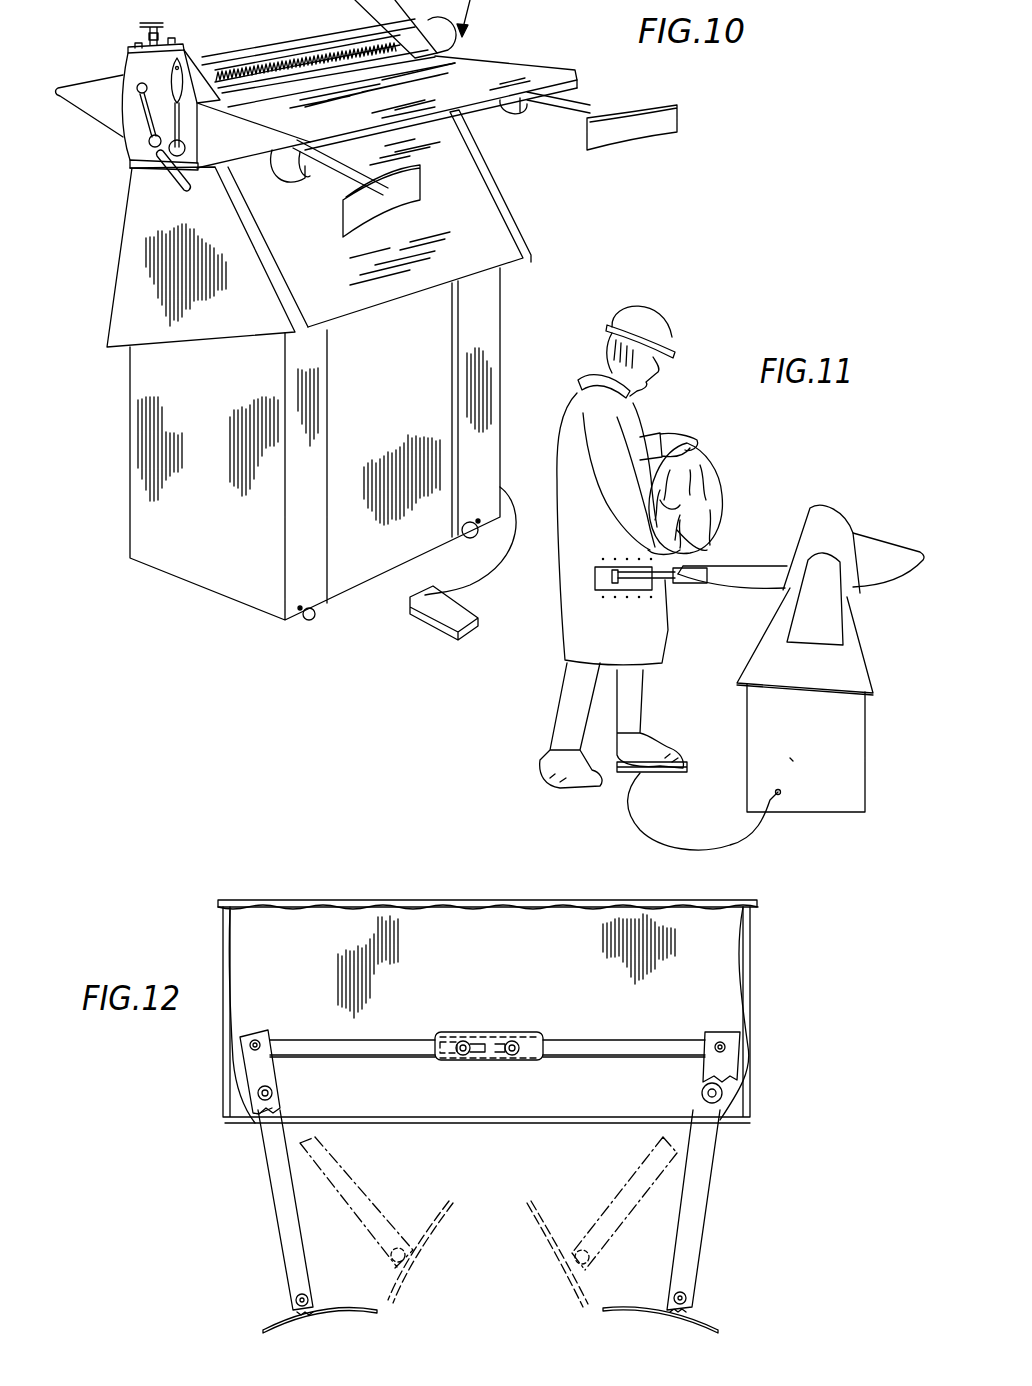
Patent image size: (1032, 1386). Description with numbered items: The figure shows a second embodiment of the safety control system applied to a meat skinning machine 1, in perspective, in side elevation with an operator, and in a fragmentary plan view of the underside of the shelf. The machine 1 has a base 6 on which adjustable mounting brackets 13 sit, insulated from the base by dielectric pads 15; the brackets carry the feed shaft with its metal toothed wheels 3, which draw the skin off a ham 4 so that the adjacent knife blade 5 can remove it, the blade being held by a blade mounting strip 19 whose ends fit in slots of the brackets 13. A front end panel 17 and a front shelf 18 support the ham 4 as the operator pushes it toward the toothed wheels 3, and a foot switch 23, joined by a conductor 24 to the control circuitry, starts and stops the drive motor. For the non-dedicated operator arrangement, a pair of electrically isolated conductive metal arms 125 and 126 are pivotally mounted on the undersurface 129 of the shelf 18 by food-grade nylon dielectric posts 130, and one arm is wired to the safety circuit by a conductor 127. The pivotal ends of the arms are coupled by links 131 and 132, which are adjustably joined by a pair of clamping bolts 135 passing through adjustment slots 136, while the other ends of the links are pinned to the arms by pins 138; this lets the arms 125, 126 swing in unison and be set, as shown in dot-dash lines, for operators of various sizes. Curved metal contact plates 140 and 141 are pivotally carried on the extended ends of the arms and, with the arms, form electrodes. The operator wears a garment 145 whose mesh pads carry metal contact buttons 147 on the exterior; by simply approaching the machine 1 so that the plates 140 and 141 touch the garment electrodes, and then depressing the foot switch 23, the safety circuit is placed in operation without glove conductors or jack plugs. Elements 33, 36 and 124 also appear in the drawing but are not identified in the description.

In FIG. 11, the meat skinning machine 1 is at (874, 644).
In FIG. 10, the metal toothed wheels 3 is at (290, 67).
In FIG. 11, the ham 4 is at (697, 480).
In FIG. 10, the knife blade 5 is at (328, 45).
In FIG. 10, the base 6 is at (210, 568).
In FIG. 10, the mounting brackets 13 is at (137, 67).
In FIG. 11, the mounting brackets 13 is at (830, 527).
In FIG. 10, the dielectric pads 15 is at (131, 168).
In FIG. 10, the front end panel 17 is at (433, 333).
In FIG. 10, the front shelf 18 is at (457, 93).
In FIG. 11, the front shelf 18 is at (767, 566).
In FIG. 12, the front shelf 18 is at (333, 935).
In FIG. 10, the blade mounting strip 19 is at (223, 58).
In FIG. 10, the foot switch 23 is at (447, 630).
In FIG. 11, the foot switch 23 is at (633, 774).
In FIG. 10, the conductor 24 is at (500, 487).
In FIG. 11, the conductor 24 is at (757, 840).
In FIG. 11, the bag neck 33 is at (677, 537).
In FIG. 10, the housing 36 is at (373, 373).
In FIG. 10, the curtain 124 is at (277, 157).
In FIG. 12, the curtain 124 is at (742, 960).
In FIG. 10, the conductive metal arm 125 is at (580, 100).
In FIG. 11, the conductive metal arm 125 is at (638, 590).
In FIG. 12, the conductive metal arm 125 is at (283, 1193).
In FIG. 10, the conductive metal arm 126 is at (327, 177).
In FIG. 12, the conductive metal arm 126 is at (623, 1183).
In FIG. 10, the conductor 127 is at (520, 110).
In FIG. 11, the conductor 127 is at (730, 592).
In FIG. 12, the conductor 127 is at (237, 947).
In FIG. 10, the undersurface of shelf 129 is at (508, 78).
In FIG. 12, the undersurface of shelf 129 is at (542, 937).
In FIG. 12, the dielectric posts 130 is at (280, 1100).
In FIG. 12, the link 131 is at (400, 1040).
In FIG. 12, the link 132 is at (618, 1040).
In FIG. 12, the bolts 135 is at (468, 1040).
In FIG. 12, the adjustment slots 136 is at (527, 1045).
In FIG. 12, the pins 138 is at (255, 1040).
In FIG. 10, the curved metal contact plate 140 is at (653, 120).
In FIG. 11, the curved metal contact plate 140 is at (595, 578).
In FIG. 12, the curved metal contact plate 140 is at (277, 1323).
In FIG. 10, the curved metal contact plate 141 is at (407, 182).
In FIG. 12, the curved metal contact plate 141 is at (637, 1310).
In FIG. 11, the garment 145 is at (557, 617).
In FIG. 11, the metal contact buttons 147 is at (603, 558).